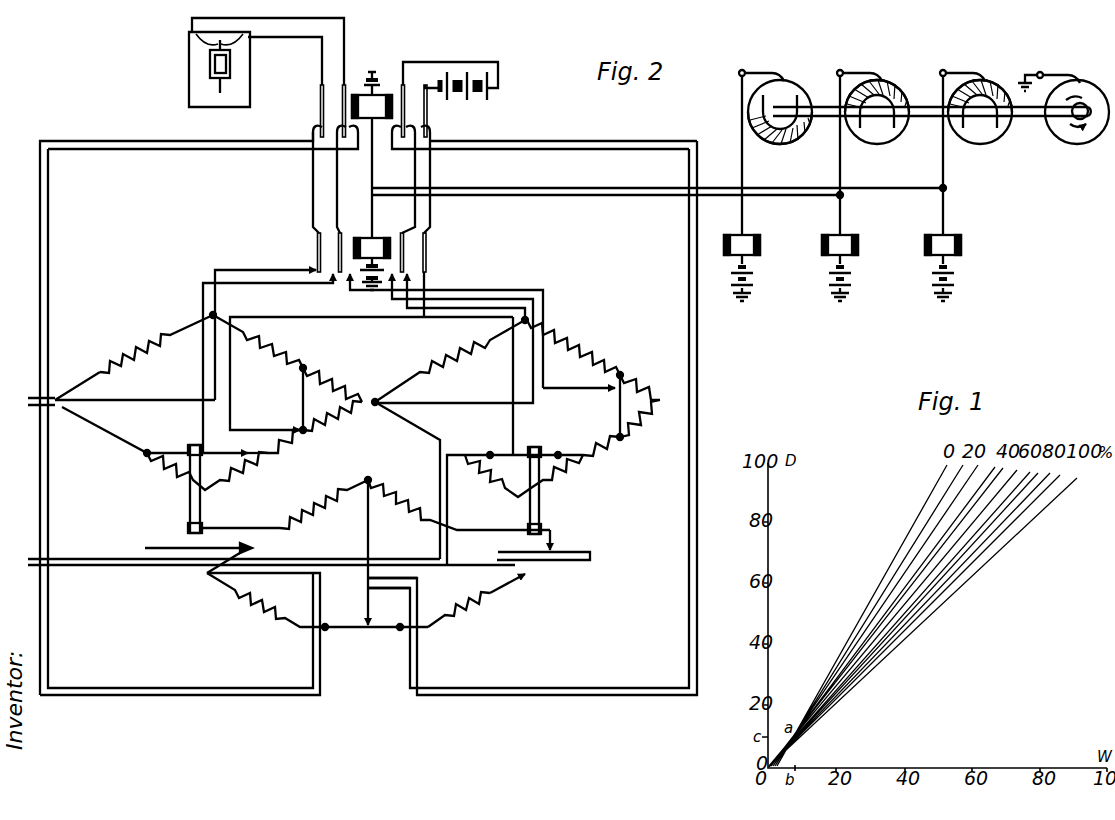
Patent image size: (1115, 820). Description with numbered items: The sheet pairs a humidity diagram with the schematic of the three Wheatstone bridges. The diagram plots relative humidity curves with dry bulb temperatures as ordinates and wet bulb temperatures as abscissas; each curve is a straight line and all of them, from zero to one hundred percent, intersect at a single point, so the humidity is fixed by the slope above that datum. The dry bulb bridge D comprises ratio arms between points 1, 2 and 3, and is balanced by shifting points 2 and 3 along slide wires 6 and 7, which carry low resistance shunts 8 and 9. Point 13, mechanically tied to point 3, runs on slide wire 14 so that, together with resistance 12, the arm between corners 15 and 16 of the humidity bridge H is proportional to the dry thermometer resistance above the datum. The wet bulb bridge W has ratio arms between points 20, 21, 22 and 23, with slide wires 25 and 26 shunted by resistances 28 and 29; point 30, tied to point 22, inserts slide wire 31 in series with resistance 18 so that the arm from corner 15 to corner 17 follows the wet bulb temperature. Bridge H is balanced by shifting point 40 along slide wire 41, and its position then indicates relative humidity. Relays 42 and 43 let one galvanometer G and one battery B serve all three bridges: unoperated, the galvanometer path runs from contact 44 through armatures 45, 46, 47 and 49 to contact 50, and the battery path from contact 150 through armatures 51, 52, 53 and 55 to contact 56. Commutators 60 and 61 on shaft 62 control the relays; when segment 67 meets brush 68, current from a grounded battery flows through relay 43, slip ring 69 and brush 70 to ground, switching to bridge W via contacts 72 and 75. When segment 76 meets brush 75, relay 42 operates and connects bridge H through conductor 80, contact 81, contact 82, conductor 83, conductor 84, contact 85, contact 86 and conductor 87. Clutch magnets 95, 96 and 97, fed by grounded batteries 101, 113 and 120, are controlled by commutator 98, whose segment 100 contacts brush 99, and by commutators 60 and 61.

The point 1 is at (216, 318).
The point 2 is at (298, 426).
The point 3 is at (188, 448).
The balancing slide wire 6 is at (302, 386).
The balancing slide wire 7 is at (234, 440).
The shunt 8 is at (315, 410).
The shunt 9 is at (172, 474).
The resistance 12 is at (326, 504).
The point 13 is at (172, 546).
The slide wire 14 is at (148, 546).
The point 15 is at (386, 538).
The point 16 is at (206, 578).
The point 17 is at (291, 593).
The resistance 18 is at (425, 500).
The point 20 is at (530, 320).
The point 21 is at (590, 386).
The point 22 is at (548, 452).
The point 23 is at (442, 442).
The balancing slide wire 25 is at (618, 408).
The balancing slide wire 26 is at (497, 455).
The shunt resistance 28 is at (640, 406).
The shunt resistance 29 is at (500, 486).
The point 30 is at (554, 548).
The slide wire 31 is at (582, 548).
The point 40 is at (369, 607).
The slide wire 41 is at (340, 624).
The relay 42 is at (354, 95).
The relay 43 is at (372, 240).
The relay contact 44 is at (314, 268).
The armature 45 is at (314, 238).
The armature 46 is at (318, 105).
The armature 47 is at (340, 94).
The armature 49 is at (342, 236).
The contact 50 is at (330, 280).
The armature 51 is at (406, 233).
The armature 52 is at (450, 99).
The armature 53 is at (427, 112).
The armature 55 is at (426, 250).
The contact 56 is at (432, 270).
The commutator 60 is at (897, 94).
The commutator 61 is at (990, 78).
The shaft 62 is at (1082, 120).
The commutator segment 67 is at (888, 138).
The brush 68 is at (856, 72).
The slip ring 69 is at (1062, 140).
The brush 70 is at (1058, 72).
The contact 72 is at (350, 292).
The contact 75 is at (428, 250).
The commutator segment 76 is at (962, 138).
The conductor 80 is at (48, 630).
The contact 81 is at (207, 151).
The contact 82 is at (312, 126).
The conductor 83 is at (40, 480).
The conductor 84 is at (689, 567).
The contact 85 is at (532, 151).
The contact 86 is at (431, 165).
The conductor 87 is at (689, 268).
The clutch controlling magnet 95 is at (742, 240).
The clutch controlling magnet 96 is at (840, 240).
The clutch controlling magnet 97 is at (943, 240).
The commutator 98 is at (780, 86).
The brush 99 is at (745, 70).
The commutator segment 100 is at (795, 95).
The grounded battery 101 is at (754, 280).
The grounded battery 113 is at (852, 280).
The grounded battery 120 is at (955, 280).
The contact 150 is at (428, 265).
The input A is at (121, 360).
The battery B is at (482, 92).
The dry bulb bridge D is at (116, 449).
The galvanometer G is at (190, 72).
The humidity bridge H is at (369, 633).
The wet bulb bridge W is at (596, 345).